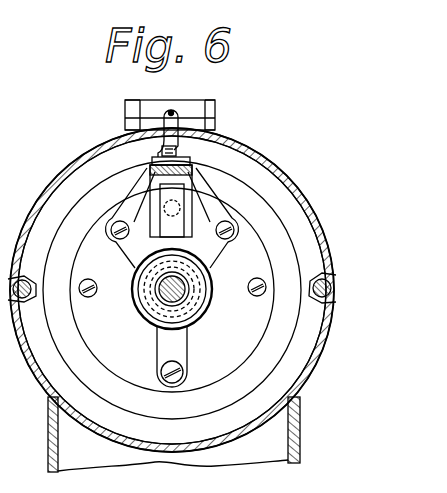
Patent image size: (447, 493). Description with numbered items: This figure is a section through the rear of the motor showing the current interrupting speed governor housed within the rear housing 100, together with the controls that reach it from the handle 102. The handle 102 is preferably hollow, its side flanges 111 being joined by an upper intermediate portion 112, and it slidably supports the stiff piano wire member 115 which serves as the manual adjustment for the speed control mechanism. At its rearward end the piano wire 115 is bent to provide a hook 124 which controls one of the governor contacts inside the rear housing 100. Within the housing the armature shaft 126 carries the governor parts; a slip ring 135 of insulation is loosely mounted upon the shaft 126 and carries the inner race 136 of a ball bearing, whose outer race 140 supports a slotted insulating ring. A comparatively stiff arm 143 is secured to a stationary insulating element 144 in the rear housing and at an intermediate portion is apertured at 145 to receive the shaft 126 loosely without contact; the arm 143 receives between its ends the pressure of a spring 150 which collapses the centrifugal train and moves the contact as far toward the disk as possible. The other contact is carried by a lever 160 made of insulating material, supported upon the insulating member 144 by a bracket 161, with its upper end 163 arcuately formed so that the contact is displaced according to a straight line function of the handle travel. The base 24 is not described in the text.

The base housing 24 is at (302, 437).
The rear housing 100 is at (333, 150).
The handle 102 is at (216, 110).
The side flanges 111 is at (216, 122).
The upper intermediate portion 112 is at (156, 110).
The piano wire member 115 is at (201, 102).
The hook 124 is at (150, 152).
The armature shaft 126 is at (203, 265).
The slip ring 135 is at (152, 312).
The inner race 136 is at (140, 298).
The outer race 140 is at (134, 270).
The arm 143 is at (165, 342).
The insulating element 144 is at (243, 346).
The aperture 145 is at (206, 282).
The spring 150 is at (207, 306).
The lever 160 is at (173, 186).
The bracket 161 is at (192, 193).
The upper end 163 is at (158, 157).